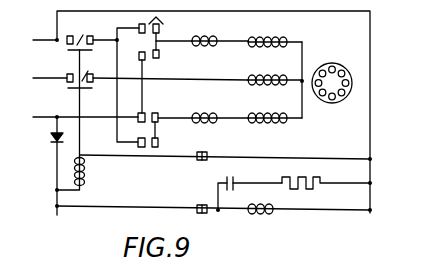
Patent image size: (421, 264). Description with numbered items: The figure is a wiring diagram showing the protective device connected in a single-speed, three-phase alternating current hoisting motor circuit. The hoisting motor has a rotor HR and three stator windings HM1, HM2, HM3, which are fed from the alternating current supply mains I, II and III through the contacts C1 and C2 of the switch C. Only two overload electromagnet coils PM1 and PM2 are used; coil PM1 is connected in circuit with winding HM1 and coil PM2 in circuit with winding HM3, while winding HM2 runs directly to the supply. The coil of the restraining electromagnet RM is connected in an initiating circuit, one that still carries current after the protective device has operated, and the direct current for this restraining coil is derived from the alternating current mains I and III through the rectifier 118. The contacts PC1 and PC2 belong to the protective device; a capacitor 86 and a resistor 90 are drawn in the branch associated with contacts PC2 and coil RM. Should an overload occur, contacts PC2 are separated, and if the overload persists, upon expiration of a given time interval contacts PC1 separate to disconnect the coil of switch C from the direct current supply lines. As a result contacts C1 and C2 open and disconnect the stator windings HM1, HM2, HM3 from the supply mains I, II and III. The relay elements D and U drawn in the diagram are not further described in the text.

The alternating current supply main I is at (36, 40).
The alternating current supply main II is at (40, 78).
The alternating current supply main III is at (75, 117).
The switch contact C1 is at (92, 35).
The switch contact C2 is at (157, 74).
The relay D is at (144, 50).
The relay U contacts U is at (150, 110).
The overload electromagnet coil PM1 is at (203, 34).
The overload electromagnet coil PM2 is at (208, 107).
The stator winding HM1 is at (268, 34).
The stator winding HM2 is at (266, 69).
The stator winding HM3 is at (265, 106).
The hoisting motor rotor HR is at (334, 63).
The protective device contacts PC1 is at (203, 152).
The protective device contacts PC2 is at (201, 204).
The capacitor 86 is at (229, 181).
The resistor 90 is at (326, 176).
The restraining electromagnet coil RM is at (277, 206).
The switch C is at (86, 169).
The rectifier 118 is at (53, 135).